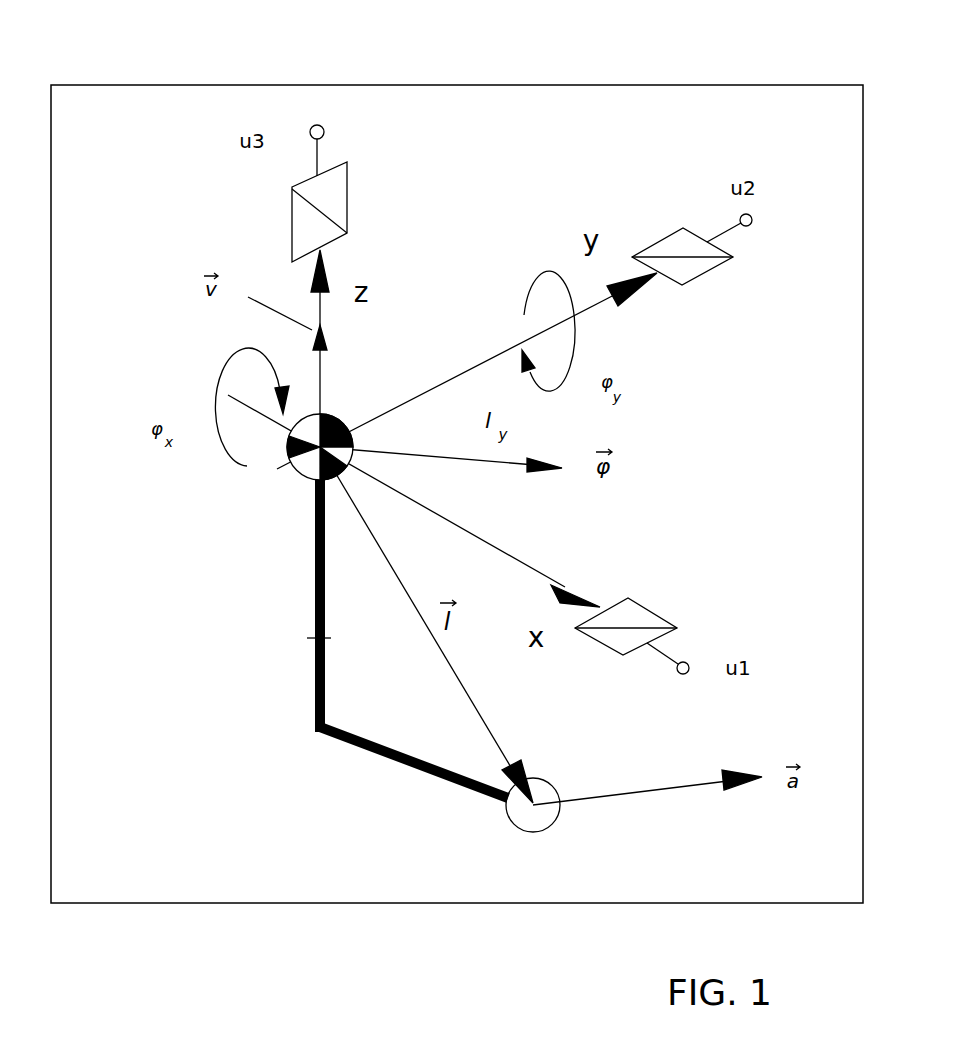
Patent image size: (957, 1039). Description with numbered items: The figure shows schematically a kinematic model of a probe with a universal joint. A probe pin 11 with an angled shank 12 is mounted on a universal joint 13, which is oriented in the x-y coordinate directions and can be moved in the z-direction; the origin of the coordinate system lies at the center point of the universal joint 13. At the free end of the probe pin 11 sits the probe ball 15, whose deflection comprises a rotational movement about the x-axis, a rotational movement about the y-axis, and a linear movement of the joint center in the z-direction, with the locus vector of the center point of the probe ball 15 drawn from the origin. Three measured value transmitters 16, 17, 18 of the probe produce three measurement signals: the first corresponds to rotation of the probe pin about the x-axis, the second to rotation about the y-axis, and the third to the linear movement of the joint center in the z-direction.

The probe pin 11 is at (317, 693).
The angled shank 12 is at (352, 743).
The universal joint 13 is at (295, 482).
The probe ball 15 is at (553, 827).
The measured value transmitter 16 is at (610, 655).
The measured value transmitter 17 is at (702, 277).
The measured value transmitter 18 is at (358, 196).